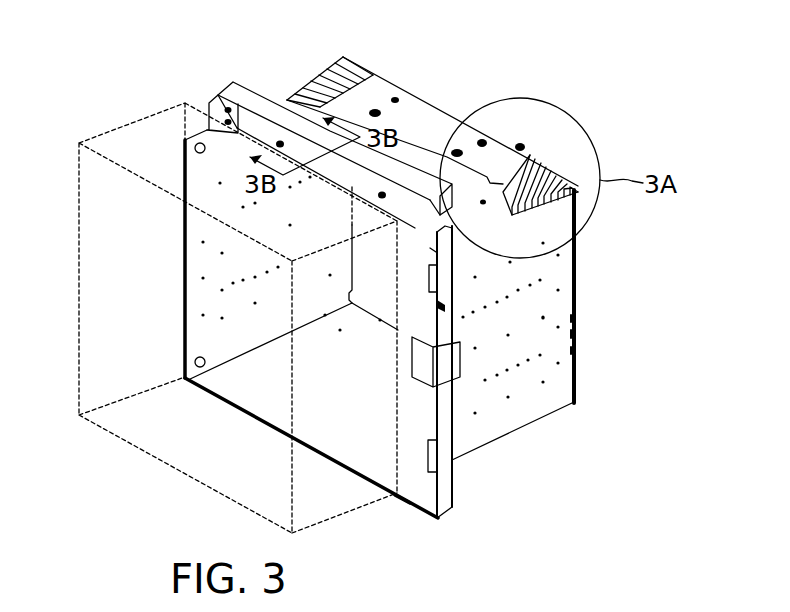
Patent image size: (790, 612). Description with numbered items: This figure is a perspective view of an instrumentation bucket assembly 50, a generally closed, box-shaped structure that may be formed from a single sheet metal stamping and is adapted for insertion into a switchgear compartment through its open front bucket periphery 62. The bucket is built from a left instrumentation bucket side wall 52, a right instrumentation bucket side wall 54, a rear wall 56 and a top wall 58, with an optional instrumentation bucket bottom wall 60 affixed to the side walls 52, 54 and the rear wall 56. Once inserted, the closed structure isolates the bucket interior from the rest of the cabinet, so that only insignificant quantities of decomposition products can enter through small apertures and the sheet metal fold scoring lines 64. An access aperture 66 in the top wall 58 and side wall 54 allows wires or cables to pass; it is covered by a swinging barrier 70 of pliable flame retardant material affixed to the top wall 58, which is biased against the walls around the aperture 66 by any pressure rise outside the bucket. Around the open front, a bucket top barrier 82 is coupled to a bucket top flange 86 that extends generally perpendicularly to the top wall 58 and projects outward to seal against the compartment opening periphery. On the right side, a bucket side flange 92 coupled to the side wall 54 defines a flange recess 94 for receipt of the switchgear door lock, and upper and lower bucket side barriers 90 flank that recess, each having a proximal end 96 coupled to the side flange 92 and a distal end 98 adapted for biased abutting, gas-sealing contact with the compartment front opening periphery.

The instrumentation bucket assembly 50 is at (172, 276).
The left instrumentation bucket side wall 52 is at (258, 345).
The right instrumentation bucket side wall 54 is at (557, 272).
The rear wall 56 is at (388, 252).
The top wall 58 is at (447, 120).
The instrumentation bucket bottom wall 60 is at (342, 377).
The open front bucket periphery 62 is at (100, 132).
The sheet metal fold scoring lines 64 is at (576, 376).
The access aperture 66 is at (527, 143).
The swinging barrier 70 is at (493, 148).
The bucket top barrier 82 is at (263, 90).
The bucket top flange 86 is at (403, 197).
The bucket side barrier 90 is at (575, 240).
The bucket side flange 92 is at (407, 485).
The flange recess 94 is at (447, 363).
The proximal end 96 is at (432, 250).
The distal end 98 is at (445, 270).